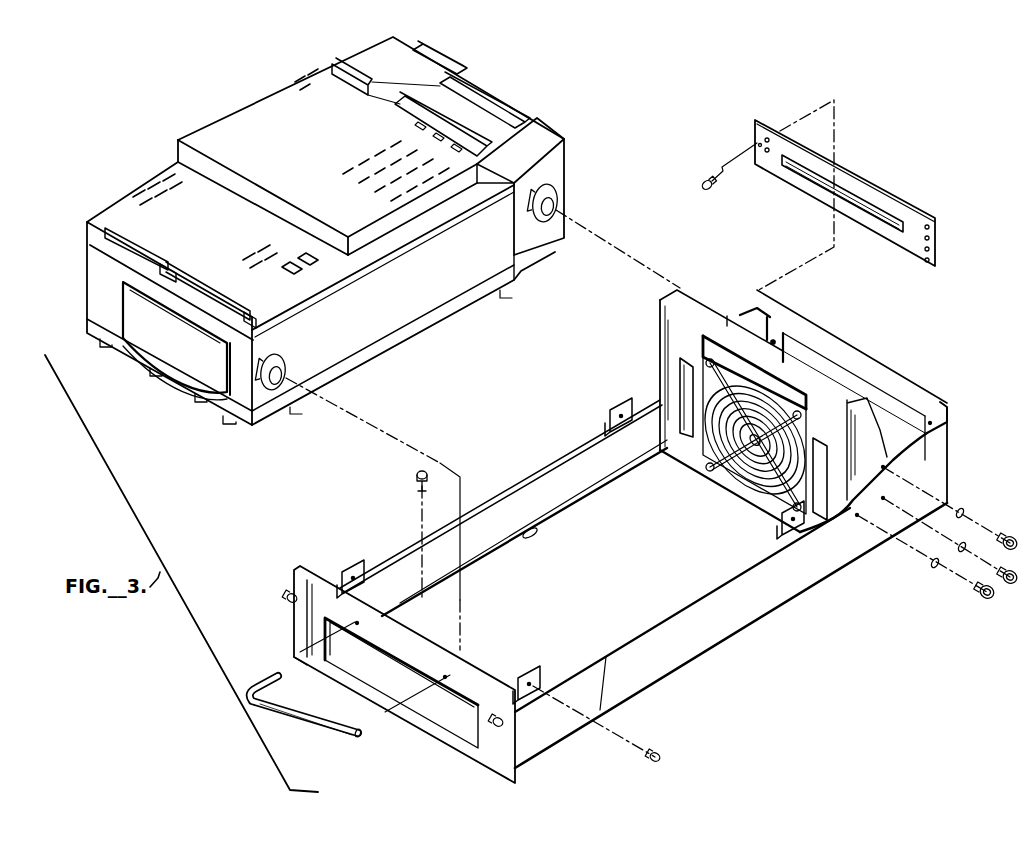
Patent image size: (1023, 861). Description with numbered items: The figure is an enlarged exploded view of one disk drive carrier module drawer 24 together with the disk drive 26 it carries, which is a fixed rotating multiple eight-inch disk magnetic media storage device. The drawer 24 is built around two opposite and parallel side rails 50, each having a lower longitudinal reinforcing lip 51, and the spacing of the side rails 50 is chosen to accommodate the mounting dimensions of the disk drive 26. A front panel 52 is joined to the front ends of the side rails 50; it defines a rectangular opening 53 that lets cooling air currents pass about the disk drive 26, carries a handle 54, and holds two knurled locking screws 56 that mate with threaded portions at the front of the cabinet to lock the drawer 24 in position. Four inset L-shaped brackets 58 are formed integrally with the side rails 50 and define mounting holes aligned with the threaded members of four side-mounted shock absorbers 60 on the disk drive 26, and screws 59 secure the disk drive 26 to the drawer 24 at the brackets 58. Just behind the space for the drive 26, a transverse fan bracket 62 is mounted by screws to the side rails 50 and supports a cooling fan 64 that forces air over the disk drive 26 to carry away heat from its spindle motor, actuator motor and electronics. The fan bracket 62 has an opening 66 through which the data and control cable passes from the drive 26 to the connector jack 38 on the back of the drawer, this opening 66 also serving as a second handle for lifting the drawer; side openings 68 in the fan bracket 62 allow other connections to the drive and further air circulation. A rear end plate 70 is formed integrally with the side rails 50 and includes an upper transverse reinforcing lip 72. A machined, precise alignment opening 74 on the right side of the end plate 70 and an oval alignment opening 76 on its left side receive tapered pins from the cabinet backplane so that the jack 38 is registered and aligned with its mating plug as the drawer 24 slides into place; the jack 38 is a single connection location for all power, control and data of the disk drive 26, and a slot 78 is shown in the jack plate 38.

The disk drive carrier module drawer 24 is at (793, 653).
The disk drive 26 is at (325, 231).
The connector jack 38 is at (897, 225).
The side rail 50 is at (535, 490).
The lower longitudinal reinforcing lip 51 is at (540, 530).
The front panel 52 is at (503, 765).
The rectangular opening 53 is at (447, 710).
The handle 54 is at (342, 743).
The knurled locking screw 56 is at (288, 596).
The inset L-shaped bracket 58 is at (360, 570).
The screw 59 is at (660, 757).
The side-mounted shock absorber 60 is at (560, 203).
The transverse fan bracket 62 is at (672, 340).
The cooling fan 64 is at (745, 442).
The opening 66 is at (746, 366).
The side opening 68 is at (690, 395).
The rear end plate 70 is at (786, 326).
The upper transverse reinforcing lip 72 is at (824, 338).
The alignment opening 74 is at (931, 420).
The oval alignment opening 76 is at (773, 338).
The slot 78 is at (878, 194).